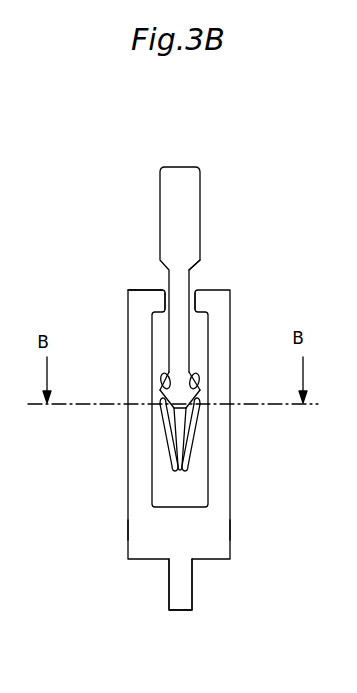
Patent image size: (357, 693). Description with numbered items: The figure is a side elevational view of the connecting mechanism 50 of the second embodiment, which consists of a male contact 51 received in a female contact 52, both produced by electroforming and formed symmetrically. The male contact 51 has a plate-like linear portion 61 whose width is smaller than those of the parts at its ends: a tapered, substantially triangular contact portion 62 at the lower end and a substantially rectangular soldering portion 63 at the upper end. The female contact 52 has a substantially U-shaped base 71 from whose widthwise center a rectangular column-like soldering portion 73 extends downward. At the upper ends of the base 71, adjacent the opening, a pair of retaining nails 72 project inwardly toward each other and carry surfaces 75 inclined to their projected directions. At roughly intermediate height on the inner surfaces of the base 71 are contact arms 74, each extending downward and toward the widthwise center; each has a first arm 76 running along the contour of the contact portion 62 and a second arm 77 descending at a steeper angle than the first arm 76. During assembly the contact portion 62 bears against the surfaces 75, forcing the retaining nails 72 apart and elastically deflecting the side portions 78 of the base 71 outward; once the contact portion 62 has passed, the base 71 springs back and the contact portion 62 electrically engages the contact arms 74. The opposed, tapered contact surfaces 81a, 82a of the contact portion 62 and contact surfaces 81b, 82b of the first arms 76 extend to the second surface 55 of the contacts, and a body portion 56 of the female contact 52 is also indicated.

The connecting mechanism 50 is at (204, 166).
The male contact 51 is at (159, 191).
The female contact 52 is at (134, 562).
The second surface 55 is at (160, 215).
The housing body portion 56 is at (143, 530).
The linear portion 61 is at (198, 264).
The contact portion 62 is at (130, 291).
The soldering portion 63 is at (193, 203).
The base 71 is at (222, 533).
The retaining nails 72 is at (162, 290).
The soldering portion 73 is at (181, 601).
The contact arms 74 is at (172, 466).
The inclined surfaces 75 is at (175, 383).
The first arm 76 is at (158, 408).
The second arm 77 is at (160, 445).
The side portions 78 is at (140, 340).
The contact surface 81a is at (162, 398).
The contact surface 81b is at (160, 376).
The contact surface 82a is at (198, 398).
The contact surface 82b is at (200, 376).